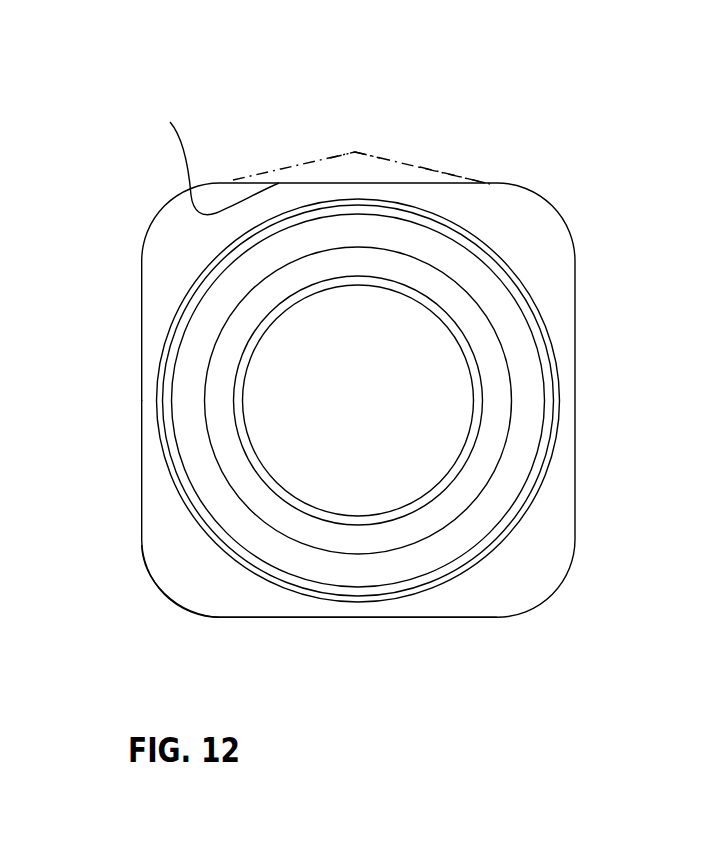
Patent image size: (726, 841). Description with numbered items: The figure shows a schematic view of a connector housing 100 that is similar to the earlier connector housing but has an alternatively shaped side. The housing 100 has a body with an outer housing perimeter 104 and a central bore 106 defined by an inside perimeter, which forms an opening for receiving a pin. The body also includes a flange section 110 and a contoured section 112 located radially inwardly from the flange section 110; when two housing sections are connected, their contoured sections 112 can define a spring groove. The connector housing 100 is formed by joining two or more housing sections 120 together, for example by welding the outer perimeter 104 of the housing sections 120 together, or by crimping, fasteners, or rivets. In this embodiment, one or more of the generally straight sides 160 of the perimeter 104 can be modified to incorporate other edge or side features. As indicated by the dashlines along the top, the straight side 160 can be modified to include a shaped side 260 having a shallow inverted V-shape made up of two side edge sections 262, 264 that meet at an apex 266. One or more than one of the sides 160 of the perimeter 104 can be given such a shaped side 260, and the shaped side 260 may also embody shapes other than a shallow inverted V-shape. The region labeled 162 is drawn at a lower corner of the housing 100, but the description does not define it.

The connector housing 100 is at (383, 676).
The housing perimeter 104 is at (146, 267).
The bore 106 is at (381, 424).
The flange section 110 is at (240, 597).
The contoured section 112 is at (482, 521).
The housing section 120 is at (166, 521).
The side 160 is at (608, 280).
The lower corner portion 162 is at (168, 598).
The shaped side 260 is at (395, 158).
The side edge section 262 is at (438, 170).
The side edge section 264 is at (296, 168).
The apex 266 is at (362, 152).